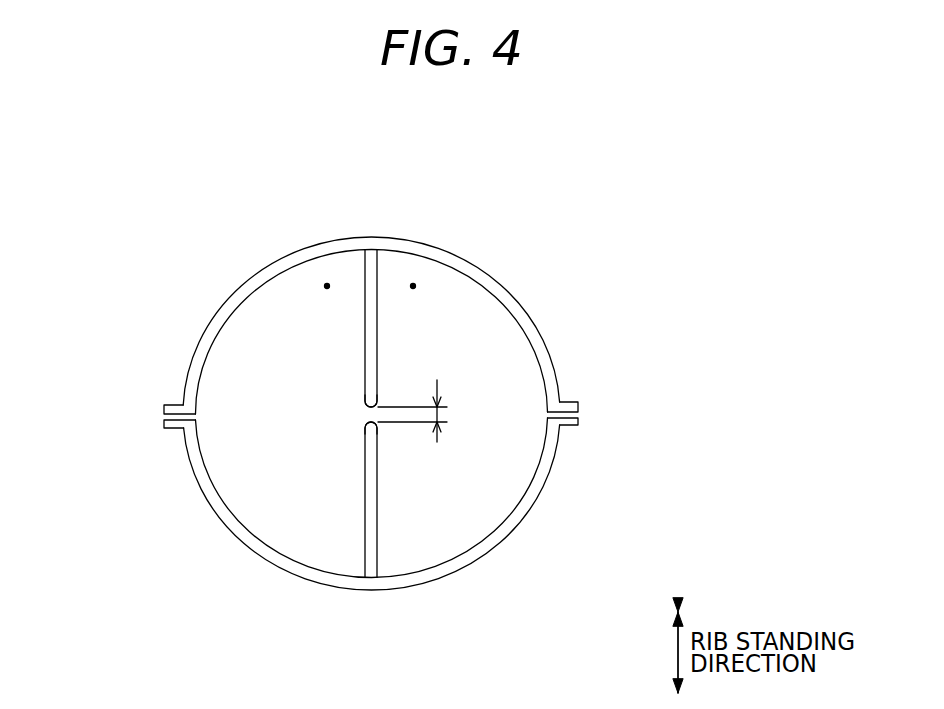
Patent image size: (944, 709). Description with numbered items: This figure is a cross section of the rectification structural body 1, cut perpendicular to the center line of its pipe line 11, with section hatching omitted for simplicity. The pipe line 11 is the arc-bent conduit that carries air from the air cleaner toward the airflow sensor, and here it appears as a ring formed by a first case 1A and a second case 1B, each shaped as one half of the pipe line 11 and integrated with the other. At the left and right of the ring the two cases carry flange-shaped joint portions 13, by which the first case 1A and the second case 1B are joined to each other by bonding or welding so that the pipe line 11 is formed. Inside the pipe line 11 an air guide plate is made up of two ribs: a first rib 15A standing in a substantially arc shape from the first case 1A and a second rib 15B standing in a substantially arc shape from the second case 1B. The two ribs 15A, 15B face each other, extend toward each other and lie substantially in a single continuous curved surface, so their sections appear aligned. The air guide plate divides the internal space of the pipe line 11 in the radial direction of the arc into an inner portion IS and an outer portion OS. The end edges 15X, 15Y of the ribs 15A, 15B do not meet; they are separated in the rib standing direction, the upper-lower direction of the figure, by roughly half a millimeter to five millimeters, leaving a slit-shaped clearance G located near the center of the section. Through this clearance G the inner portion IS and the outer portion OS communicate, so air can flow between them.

The rectification structural body 1 is at (491, 137).
The pipe line 11 is at (206, 322).
The first case 1A is at (559, 457).
The second case 1B is at (559, 361).
The joint portions 13 is at (578, 401).
The first rib 15A is at (381, 475).
The second rib 15B is at (380, 329).
The end edge of the first rib 15X is at (369, 428).
The end edge of the second rib 15Y is at (369, 403).
The slit-shaped clearance G is at (426, 411).
The outer portion OS is at (327, 285).
The inner portion IS is at (413, 285).